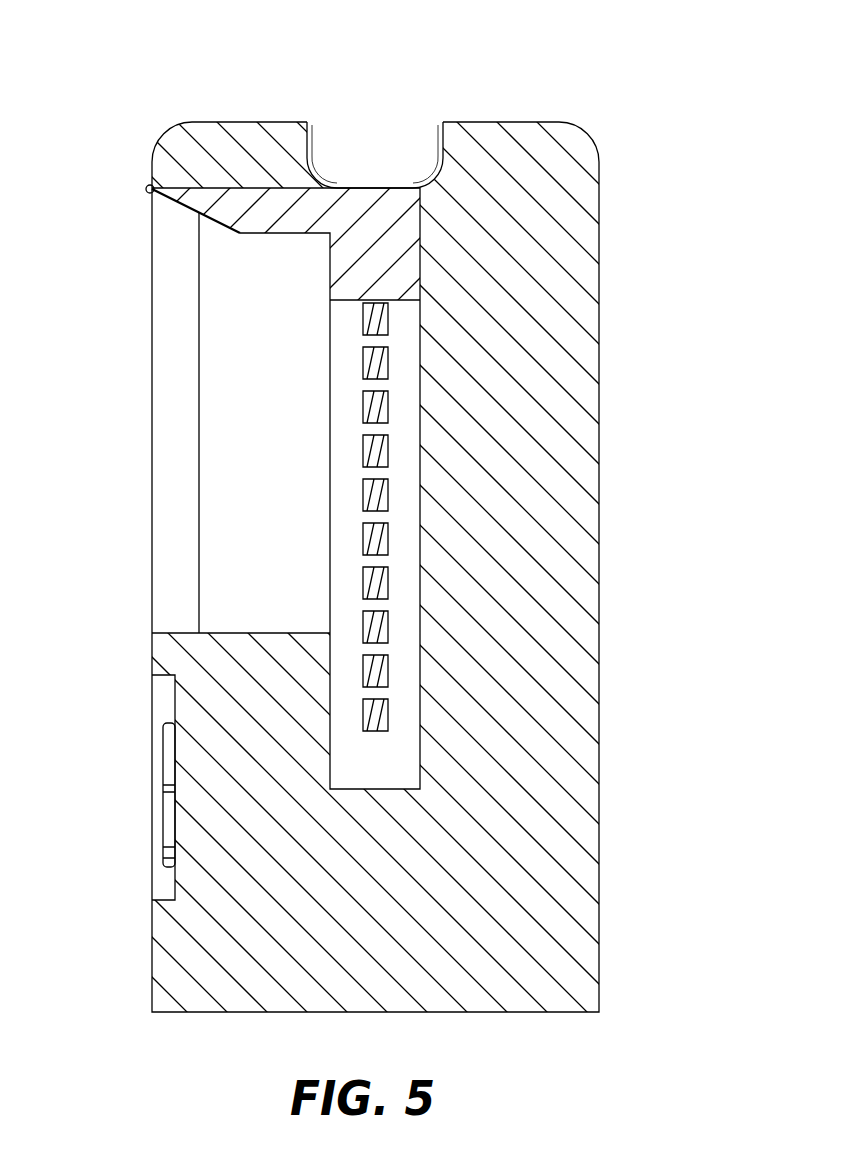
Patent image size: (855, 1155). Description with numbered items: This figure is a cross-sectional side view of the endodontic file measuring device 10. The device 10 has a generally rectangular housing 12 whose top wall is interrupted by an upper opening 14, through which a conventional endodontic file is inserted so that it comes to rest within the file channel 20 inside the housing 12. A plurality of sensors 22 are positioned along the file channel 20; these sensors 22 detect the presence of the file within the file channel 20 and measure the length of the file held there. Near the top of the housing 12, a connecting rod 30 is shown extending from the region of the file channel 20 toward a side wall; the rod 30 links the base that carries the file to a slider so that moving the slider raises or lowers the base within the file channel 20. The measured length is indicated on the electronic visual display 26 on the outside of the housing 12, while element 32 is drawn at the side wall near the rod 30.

The endodontic file measuring device 10 is at (680, 172).
The housing 12 is at (600, 520).
The upper opening 14 is at (377, 97).
The file channel 20 is at (319, 515).
The sensors 22 is at (363, 403).
The electronic visual display 26 is at (163, 731).
The connecting rod 30 is at (240, 219).
The hinge 32 is at (146, 189).